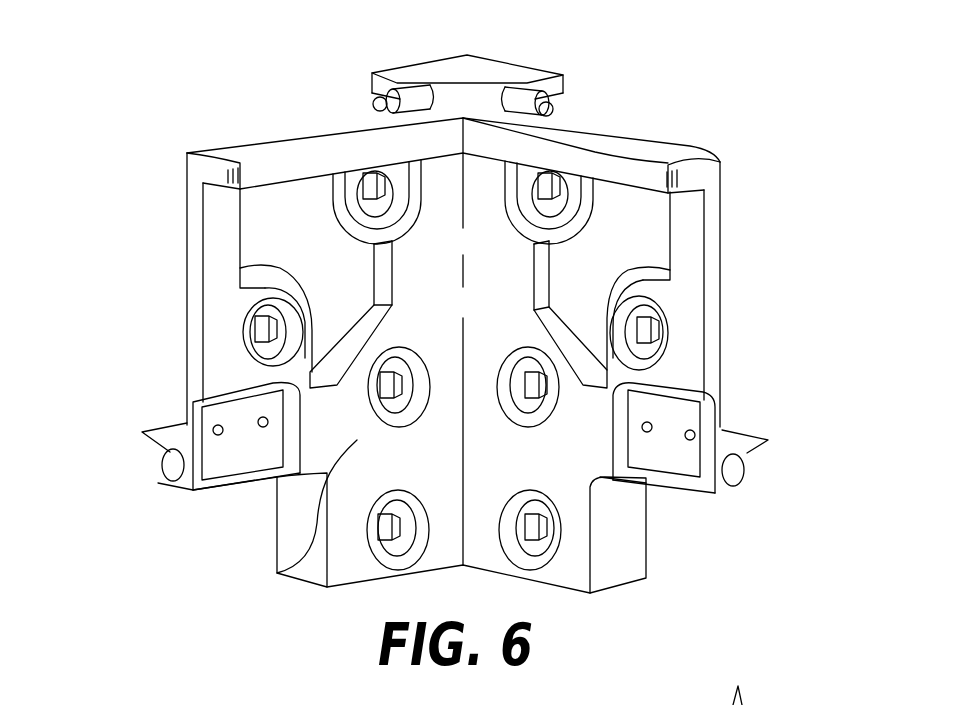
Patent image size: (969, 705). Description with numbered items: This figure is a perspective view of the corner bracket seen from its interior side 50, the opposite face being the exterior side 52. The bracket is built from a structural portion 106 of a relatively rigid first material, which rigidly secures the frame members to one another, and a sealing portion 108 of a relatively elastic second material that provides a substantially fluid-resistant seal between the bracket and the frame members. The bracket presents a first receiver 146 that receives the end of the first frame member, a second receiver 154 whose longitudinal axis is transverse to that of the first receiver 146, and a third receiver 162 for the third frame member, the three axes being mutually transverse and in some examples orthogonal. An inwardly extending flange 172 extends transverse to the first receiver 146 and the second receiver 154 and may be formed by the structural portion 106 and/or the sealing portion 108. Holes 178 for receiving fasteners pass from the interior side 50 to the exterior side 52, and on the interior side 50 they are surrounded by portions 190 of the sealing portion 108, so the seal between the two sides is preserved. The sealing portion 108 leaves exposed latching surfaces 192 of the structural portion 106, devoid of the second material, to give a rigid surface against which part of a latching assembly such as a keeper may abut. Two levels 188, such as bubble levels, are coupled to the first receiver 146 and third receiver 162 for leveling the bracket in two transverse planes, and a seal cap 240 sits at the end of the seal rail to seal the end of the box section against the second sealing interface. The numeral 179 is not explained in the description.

The interior side 50 is at (622, 198).
The exterior side 52 is at (692, 66).
The structural portion 106 is at (287, 220).
The sealing portion 108 is at (277, 573).
The first receiver 146 is at (147, 218).
The second receiver 154 is at (370, 596).
The third receiver 162 is at (772, 306).
The inwardly extending flange 172 is at (645, 166).
The holes 178 is at (368, 174).
The insert 179 is at (687, 704).
The levels 188 is at (162, 460).
The portions of the sealing portion 190 is at (410, 190).
The latching surfaces 192 is at (224, 462).
The seal cap 240 is at (510, 62).